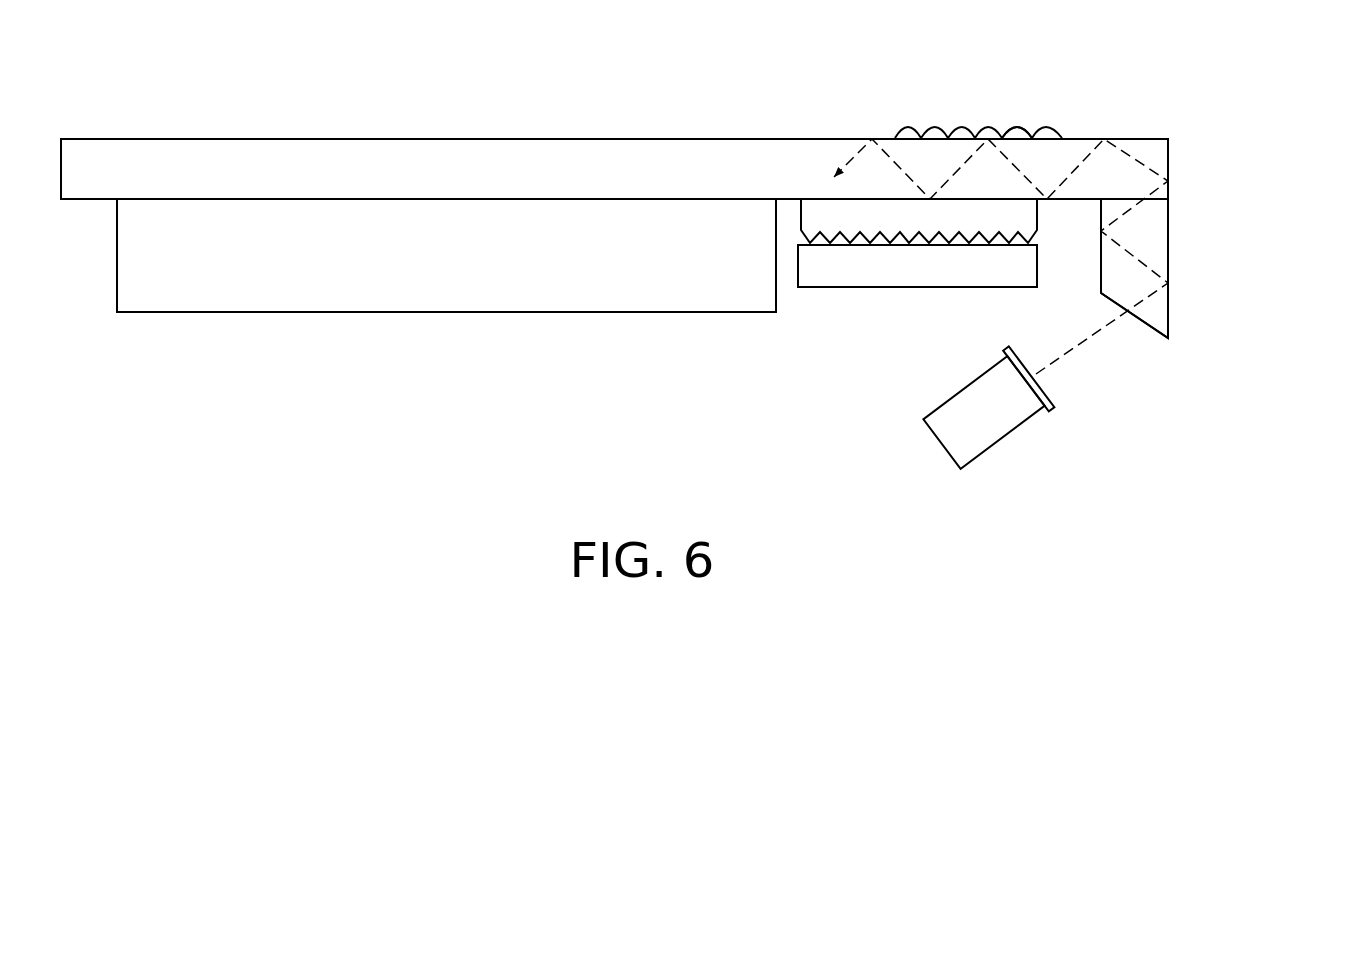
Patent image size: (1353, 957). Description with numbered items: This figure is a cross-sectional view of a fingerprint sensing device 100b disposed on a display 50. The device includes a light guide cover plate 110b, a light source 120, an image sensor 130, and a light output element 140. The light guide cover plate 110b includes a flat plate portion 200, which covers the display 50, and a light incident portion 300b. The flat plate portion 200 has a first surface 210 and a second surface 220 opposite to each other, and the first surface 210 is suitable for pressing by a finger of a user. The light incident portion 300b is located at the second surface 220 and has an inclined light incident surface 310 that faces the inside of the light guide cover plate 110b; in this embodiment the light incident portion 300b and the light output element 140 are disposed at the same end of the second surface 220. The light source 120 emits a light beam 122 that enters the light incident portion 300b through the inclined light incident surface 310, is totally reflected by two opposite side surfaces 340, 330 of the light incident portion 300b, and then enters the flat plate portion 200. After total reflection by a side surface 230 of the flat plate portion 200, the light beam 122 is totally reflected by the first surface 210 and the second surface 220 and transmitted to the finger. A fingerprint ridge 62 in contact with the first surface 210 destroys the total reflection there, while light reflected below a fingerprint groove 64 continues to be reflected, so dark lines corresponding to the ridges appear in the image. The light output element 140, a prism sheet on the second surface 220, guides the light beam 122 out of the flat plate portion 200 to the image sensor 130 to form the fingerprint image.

The display 50 is at (650, 312).
The fingerprint ridge 62 is at (970, 137).
The fingerprint groove 64 is at (1015, 128).
The fingerprint sensing device 100b is at (1151, 89).
The light guide cover plate 110b is at (1276, 163).
The light source 120 is at (1000, 427).
The light beam 122 is at (1082, 345).
The image sensor 130 is at (827, 280).
The light output element 140 is at (868, 217).
The flat plate portion 200 is at (1162, 165).
The first surface 210 is at (452, 137).
The second surface 220 is at (448, 201).
The side surface 230 is at (1170, 152).
The light incident portion 300b is at (1150, 232).
The inclined light incident surface 310 is at (1143, 323).
The side surface 330 is at (1099, 254).
The side surface 340 is at (1170, 257).